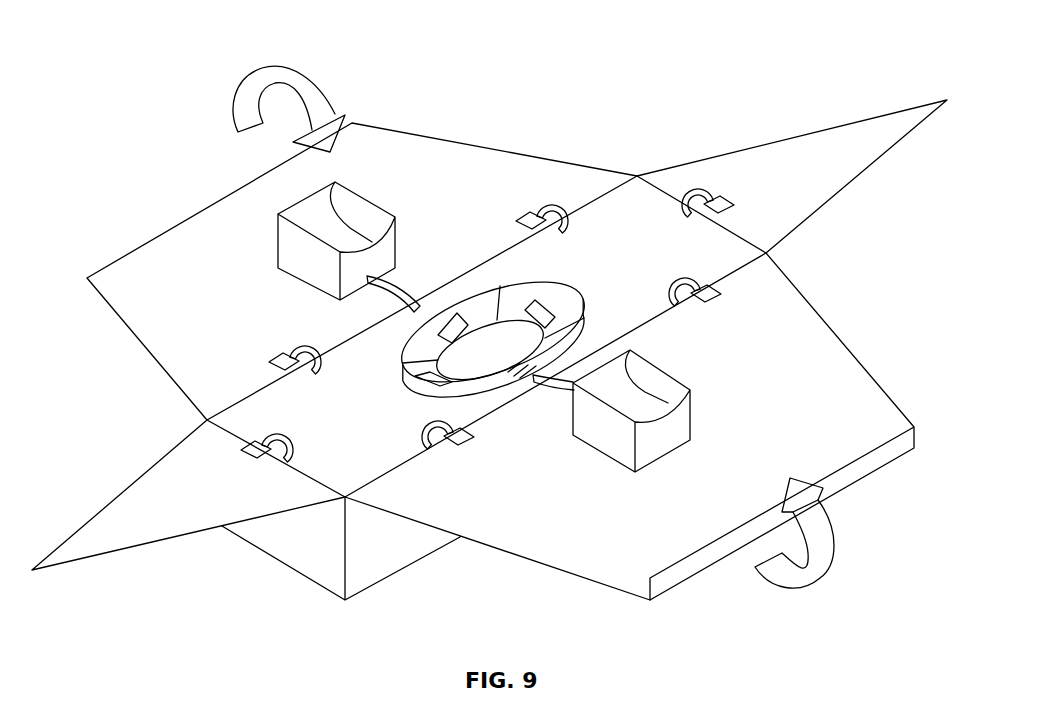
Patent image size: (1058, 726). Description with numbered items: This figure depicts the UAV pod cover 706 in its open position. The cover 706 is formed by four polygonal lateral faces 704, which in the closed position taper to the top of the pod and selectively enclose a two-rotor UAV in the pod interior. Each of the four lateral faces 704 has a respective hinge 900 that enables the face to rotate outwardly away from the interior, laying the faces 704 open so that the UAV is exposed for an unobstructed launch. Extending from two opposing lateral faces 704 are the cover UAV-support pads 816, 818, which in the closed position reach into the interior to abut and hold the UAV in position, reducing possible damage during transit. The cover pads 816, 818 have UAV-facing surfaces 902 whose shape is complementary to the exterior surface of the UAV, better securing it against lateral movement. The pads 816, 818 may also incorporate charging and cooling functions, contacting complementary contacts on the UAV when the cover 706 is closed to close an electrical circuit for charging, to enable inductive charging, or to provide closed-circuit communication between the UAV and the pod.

The polygonal lateral faces 704 is at (477, 172).
The UAV pod cover 706 is at (603, 166).
The hinges 900 is at (291, 354).
The UAV-facing surfaces 902 is at (554, 348).
The cover UAV-support pad 816 is at (297, 250).
The cover UAV-support pad 818 is at (603, 433).